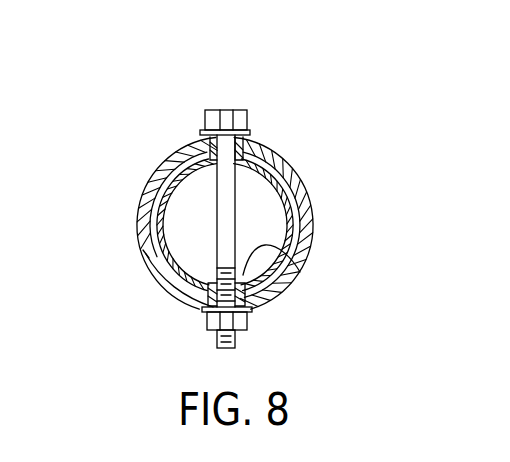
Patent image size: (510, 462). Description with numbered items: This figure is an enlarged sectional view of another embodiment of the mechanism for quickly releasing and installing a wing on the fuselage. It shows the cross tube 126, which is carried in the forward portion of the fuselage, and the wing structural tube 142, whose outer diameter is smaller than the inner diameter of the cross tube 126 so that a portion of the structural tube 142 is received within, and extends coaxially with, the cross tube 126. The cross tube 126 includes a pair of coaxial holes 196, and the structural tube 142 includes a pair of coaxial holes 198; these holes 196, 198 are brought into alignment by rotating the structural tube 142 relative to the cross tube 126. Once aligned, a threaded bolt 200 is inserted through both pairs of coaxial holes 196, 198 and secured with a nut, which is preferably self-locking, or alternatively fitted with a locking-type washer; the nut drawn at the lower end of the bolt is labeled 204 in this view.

The cross tube 126 is at (304, 205).
The structural tube 142 is at (149, 258).
The coaxial holes 196 is at (244, 140).
The coaxial holes 198 is at (262, 158).
The threaded bolt 200 is at (222, 109).
The lower nut 204 is at (246, 323).